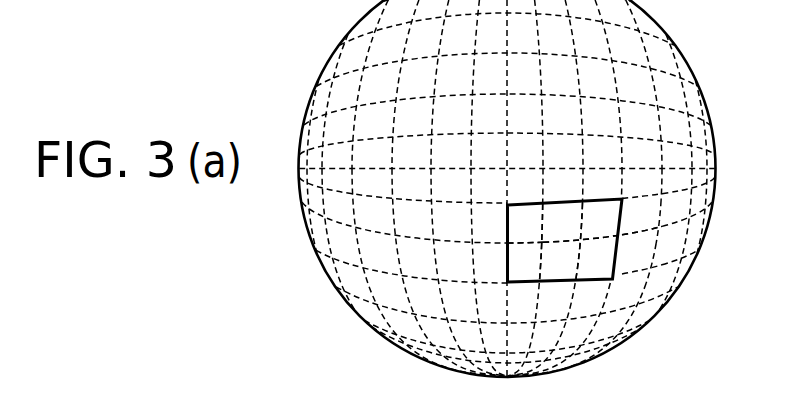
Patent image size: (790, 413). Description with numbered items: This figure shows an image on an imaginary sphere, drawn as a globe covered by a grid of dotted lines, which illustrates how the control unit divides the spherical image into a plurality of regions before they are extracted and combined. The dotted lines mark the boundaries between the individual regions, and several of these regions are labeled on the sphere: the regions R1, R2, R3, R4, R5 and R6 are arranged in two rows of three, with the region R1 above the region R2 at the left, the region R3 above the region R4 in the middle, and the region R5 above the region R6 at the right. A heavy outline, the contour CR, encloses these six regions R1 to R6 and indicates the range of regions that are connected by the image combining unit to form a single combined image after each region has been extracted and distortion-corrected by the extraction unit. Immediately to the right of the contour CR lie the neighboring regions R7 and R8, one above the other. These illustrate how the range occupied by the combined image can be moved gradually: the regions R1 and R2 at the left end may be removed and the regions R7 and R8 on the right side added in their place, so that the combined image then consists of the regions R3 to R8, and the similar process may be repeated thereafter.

The region R1 is at (526, 223).
The region R2 is at (526, 262).
The region R3 is at (562, 223).
The region R4 is at (561, 261).
The region R5 is at (601, 223).
The region R6 is at (598, 258).
The region R7 is at (642, 218).
The region R8 is at (642, 254).
The contour CR is at (595, 283).